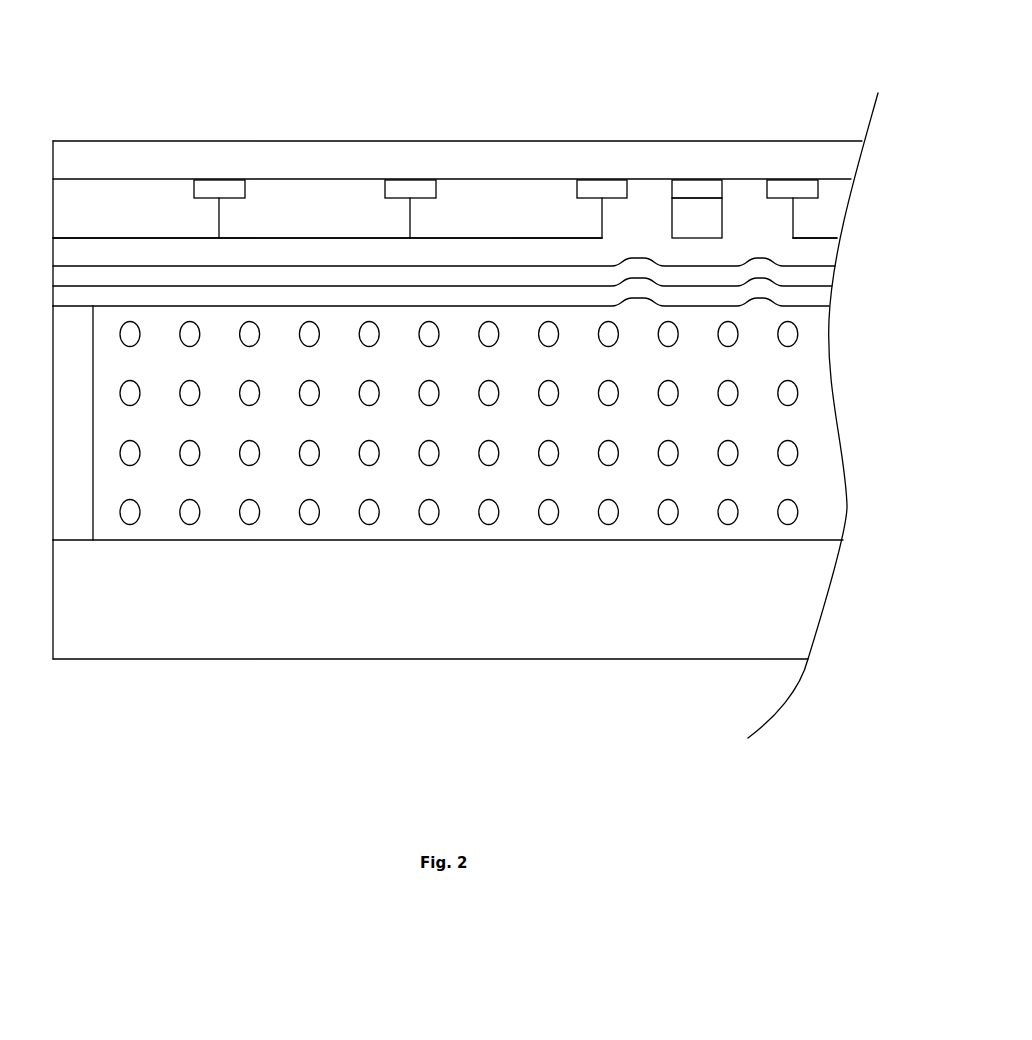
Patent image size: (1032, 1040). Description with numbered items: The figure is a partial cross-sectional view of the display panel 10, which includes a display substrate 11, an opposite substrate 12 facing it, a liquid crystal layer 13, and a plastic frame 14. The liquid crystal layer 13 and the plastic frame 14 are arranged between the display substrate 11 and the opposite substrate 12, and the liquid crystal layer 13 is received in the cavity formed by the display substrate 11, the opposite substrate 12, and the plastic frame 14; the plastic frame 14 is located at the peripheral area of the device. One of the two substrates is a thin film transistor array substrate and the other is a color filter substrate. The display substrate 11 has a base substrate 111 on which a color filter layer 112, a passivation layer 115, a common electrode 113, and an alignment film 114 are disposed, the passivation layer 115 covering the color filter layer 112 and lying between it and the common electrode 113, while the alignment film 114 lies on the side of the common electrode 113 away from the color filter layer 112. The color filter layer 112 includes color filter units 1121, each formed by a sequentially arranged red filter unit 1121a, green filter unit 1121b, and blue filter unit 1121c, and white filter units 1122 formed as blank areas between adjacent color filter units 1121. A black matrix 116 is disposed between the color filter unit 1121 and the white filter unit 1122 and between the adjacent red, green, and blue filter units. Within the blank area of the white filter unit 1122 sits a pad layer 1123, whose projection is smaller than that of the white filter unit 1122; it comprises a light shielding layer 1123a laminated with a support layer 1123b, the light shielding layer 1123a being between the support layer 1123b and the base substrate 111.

The display panel 10 is at (466, 56).
The display substrate 11 is at (47, 141).
The base substrate 111 is at (842, 152).
The color filter layer 112 is at (857, 180).
The color filter unit 1121 is at (428, 93).
The red filter unit 1121a is at (152, 195).
The green filter unit 1121b is at (344, 198).
The blue filter unit 1121c is at (507, 209).
The white filter unit 1122 is at (742, 217).
The pad layer 1123 is at (742, 100).
The light shielding layer 1123a is at (705, 189).
The support layer 1123b is at (680, 219).
The black matrix 116 is at (591, 190).
The passivation layer 115 is at (825, 253).
The common electrode 113 is at (820, 272).
The alignment film 114 is at (787, 295).
The opposite substrate 12 is at (269, 580).
The liquid crystal layer 13 is at (459, 507).
The plastic frame 14 is at (68, 522).